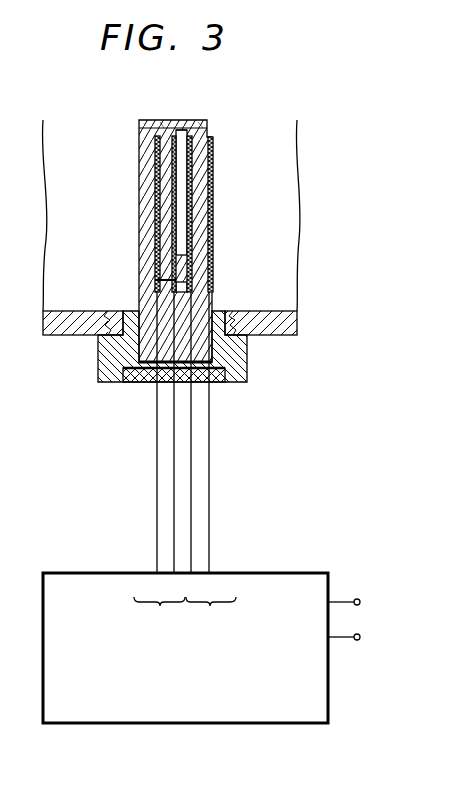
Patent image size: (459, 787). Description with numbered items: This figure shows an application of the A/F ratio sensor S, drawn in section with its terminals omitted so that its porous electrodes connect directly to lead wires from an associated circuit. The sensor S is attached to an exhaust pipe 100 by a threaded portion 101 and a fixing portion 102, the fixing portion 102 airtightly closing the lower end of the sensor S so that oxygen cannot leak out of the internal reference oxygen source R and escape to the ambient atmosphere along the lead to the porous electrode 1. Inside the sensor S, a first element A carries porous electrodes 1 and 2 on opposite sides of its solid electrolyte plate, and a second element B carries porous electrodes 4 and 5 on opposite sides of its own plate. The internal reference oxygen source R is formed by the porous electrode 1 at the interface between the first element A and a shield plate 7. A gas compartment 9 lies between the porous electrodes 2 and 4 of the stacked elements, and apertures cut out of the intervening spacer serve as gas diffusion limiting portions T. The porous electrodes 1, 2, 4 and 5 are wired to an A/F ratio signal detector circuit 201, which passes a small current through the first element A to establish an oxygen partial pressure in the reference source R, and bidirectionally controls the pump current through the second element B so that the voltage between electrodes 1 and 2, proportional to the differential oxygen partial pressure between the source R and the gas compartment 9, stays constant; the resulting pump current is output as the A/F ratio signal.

The porous electrode 1 is at (153, 222).
The porous electrode 2 is at (177, 120).
The porous electrode 4 is at (186, 154).
The porous electrode 5 is at (213, 175).
The shield plate 7 is at (143, 120).
The gas compartment 9 is at (181, 220).
The internal reference oxygen source R is at (153, 178).
The first element A is at (165, 120).
The gas diffusion limiting portion T is at (186, 127).
The second element B is at (200, 122).
The A/F ratio sensor S is at (224, 117).
The exhaust pipe 100 is at (283, 335).
The threaded portion 101 is at (243, 345).
The fixing portion 102 is at (222, 370).
The A/F ratio signal detector circuit 201 is at (285, 573).